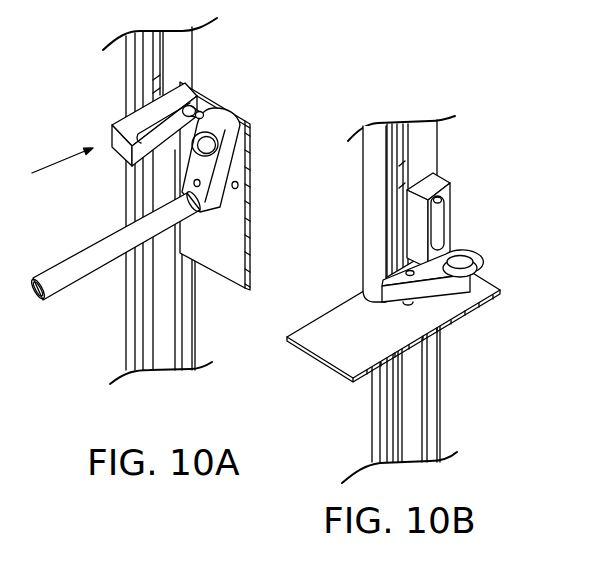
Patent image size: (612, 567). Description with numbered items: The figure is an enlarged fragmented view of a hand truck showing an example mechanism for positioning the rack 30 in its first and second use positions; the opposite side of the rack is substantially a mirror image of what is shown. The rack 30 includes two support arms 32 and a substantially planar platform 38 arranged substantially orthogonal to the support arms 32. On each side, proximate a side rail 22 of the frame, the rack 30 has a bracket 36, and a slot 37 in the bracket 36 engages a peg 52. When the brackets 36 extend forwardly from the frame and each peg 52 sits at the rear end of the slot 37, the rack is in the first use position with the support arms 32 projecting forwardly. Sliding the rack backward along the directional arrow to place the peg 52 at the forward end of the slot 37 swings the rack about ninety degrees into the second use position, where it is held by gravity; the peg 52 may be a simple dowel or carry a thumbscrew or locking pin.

In FIG. 10A, the side rail 22 is at (180, 68).
In FIG. 10B, the side rail 22 is at (423, 387).
In FIG. 10A, the rack 30 is at (268, 95).
In FIG. 10A, the support arm 32 is at (75, 288).
In FIG. 10B, the support arm 32 is at (366, 150).
In FIG. 10A, the bracket 36 is at (120, 162).
In FIG. 10B, the bracket 36 is at (440, 182).
In FIG. 10A, the slot 37 is at (112, 143).
In FIG. 10B, the slot 37 is at (440, 240).
In FIG. 10A, the platform 38 is at (203, 258).
In FIG. 10B, the platform 38 is at (334, 343).
In FIG. 10A, the peg 52 is at (202, 100).
In FIG. 10B, the peg 52 is at (444, 199).